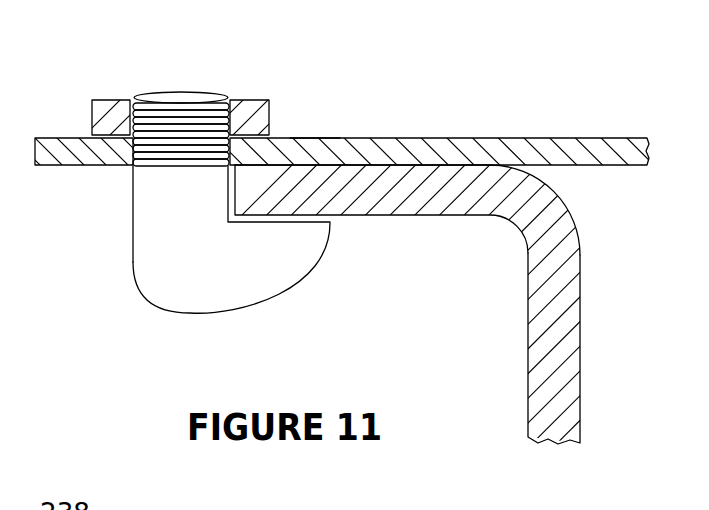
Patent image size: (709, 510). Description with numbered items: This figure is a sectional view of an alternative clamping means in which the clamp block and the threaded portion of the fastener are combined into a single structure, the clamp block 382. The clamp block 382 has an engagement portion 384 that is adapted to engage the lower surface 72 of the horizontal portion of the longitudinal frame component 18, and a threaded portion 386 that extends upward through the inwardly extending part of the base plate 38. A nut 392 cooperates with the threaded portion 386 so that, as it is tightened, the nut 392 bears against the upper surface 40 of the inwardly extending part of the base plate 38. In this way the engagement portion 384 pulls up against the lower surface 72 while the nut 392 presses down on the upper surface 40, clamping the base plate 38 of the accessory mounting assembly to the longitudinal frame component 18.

The longitudinal frame component 18 is at (582, 320).
The base plate 38 is at (467, 150).
The upper surface 40 is at (313, 137).
The lower surface 72 is at (374, 218).
The clamp block 382 is at (133, 265).
The engagement portion 384 is at (252, 290).
The threaded portion 386 is at (180, 97).
The nut 392 is at (252, 100).